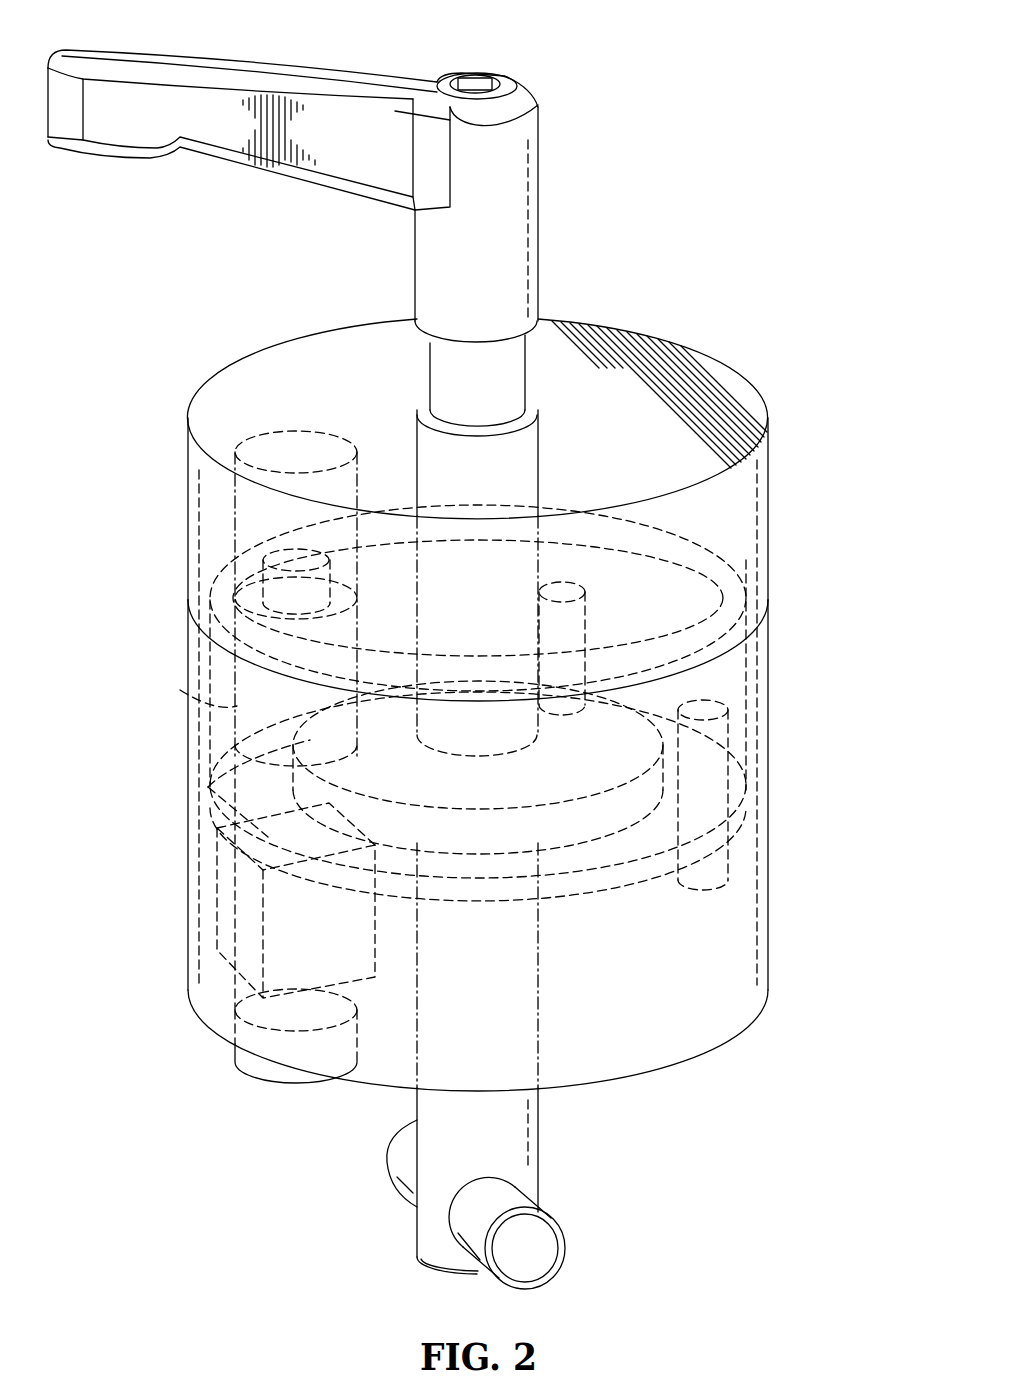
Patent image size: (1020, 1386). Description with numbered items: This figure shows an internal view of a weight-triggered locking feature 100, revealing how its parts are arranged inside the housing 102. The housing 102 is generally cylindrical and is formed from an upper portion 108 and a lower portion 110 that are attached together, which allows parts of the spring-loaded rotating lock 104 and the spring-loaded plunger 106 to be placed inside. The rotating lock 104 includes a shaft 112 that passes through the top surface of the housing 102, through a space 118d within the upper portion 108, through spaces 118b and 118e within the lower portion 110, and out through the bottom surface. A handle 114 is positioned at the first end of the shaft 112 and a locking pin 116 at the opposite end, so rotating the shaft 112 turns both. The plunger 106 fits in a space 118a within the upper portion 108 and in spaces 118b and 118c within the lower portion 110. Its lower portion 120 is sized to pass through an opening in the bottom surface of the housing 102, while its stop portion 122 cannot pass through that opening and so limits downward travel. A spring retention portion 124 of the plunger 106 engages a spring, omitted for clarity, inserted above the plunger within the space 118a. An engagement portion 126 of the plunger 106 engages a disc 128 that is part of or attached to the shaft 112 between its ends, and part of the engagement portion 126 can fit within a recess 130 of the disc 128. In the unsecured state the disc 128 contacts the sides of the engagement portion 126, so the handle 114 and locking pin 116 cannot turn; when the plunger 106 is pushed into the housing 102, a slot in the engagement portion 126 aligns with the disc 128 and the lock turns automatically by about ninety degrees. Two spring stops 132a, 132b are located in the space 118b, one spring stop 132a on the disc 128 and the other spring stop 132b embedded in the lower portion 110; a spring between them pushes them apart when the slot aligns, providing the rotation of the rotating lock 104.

The weight-triggered locking feature 100 is at (755, 56).
The housing 102 is at (535, 705).
The spring-loaded rotating lock 104 is at (560, 266).
The spring-loaded plunger 106 is at (270, 1086).
The upper portion 108 is at (770, 512).
The lower portion 110 is at (770, 925).
The shaft 112 is at (526, 378).
The handle 114 is at (165, 188).
The locking pin 116 is at (566, 1249).
The space 118a is at (252, 515).
The space 118b is at (748, 690).
The space 118c is at (236, 926).
The space 118d is at (540, 462).
The space 118e is at (540, 940).
The lower portion 120 is at (246, 1012).
The stop portion 122 is at (292, 893).
The spring retention portion 124 is at (258, 596).
The engagement portion 126 is at (226, 705).
The disc 128 is at (628, 806).
The recess 130 is at (248, 790).
The spring stop 132a is at (588, 641).
The spring stop 132b is at (732, 848).